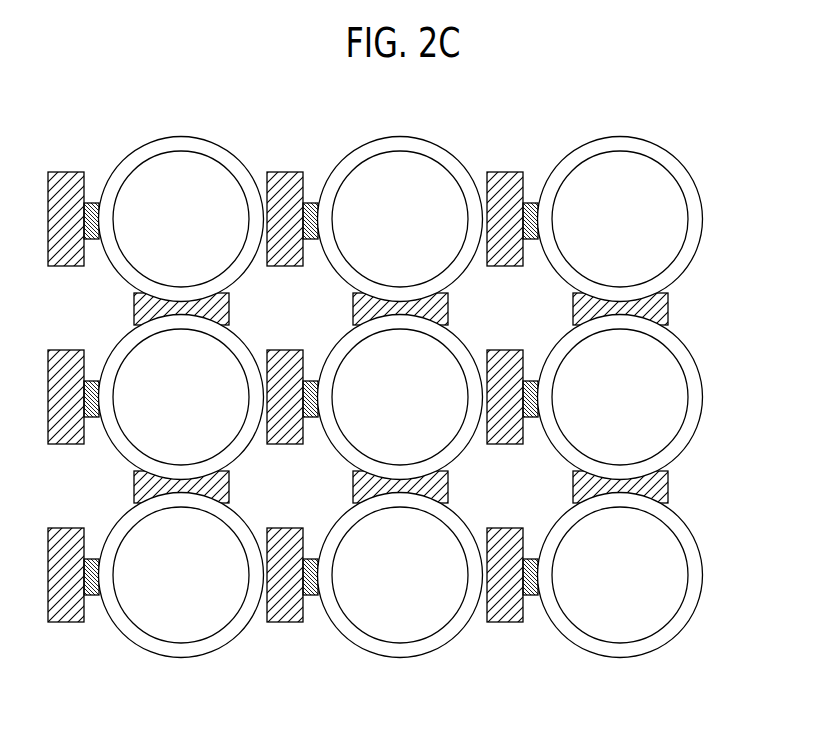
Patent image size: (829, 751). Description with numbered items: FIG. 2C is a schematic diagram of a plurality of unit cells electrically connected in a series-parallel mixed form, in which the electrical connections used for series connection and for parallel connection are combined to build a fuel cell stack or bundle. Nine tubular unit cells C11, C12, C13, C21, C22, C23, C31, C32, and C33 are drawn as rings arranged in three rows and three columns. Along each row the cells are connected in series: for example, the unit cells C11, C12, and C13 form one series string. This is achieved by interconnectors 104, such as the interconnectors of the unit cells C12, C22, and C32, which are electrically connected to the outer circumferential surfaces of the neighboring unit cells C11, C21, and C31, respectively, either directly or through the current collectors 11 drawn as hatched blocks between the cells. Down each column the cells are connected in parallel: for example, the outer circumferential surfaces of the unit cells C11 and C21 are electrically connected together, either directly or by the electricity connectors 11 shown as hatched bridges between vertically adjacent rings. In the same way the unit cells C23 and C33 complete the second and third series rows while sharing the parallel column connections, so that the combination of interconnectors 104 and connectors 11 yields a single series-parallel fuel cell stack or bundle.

The current collector 11 is at (63, 175).
The interconnector 104 is at (525, 200).
The unit cell C11 is at (217, 157).
The unit cell C12 is at (436, 157).
The unit cell C13 is at (656, 157).
The unit cell C21 is at (217, 335).
The unit cell C22 is at (436, 335).
The unit cell C23 is at (656, 335).
The unit cell C31 is at (217, 513).
The unit cell C32 is at (436, 513).
The unit cell C33 is at (656, 513).